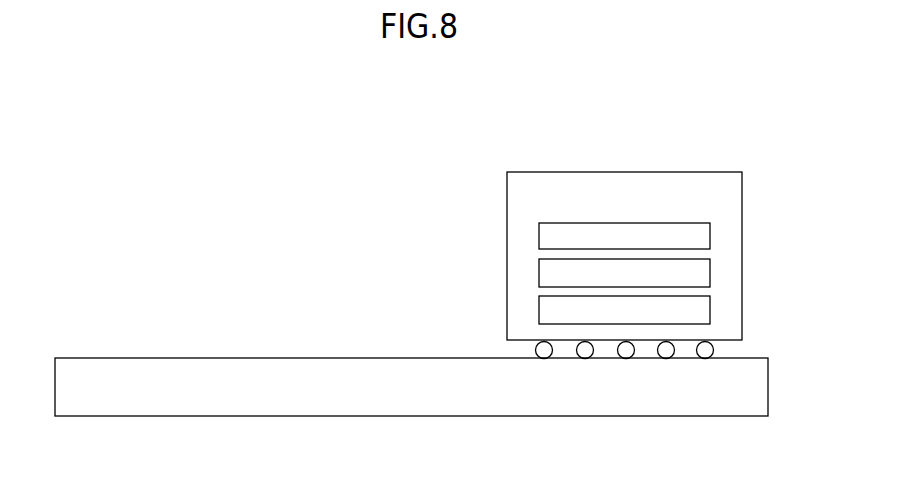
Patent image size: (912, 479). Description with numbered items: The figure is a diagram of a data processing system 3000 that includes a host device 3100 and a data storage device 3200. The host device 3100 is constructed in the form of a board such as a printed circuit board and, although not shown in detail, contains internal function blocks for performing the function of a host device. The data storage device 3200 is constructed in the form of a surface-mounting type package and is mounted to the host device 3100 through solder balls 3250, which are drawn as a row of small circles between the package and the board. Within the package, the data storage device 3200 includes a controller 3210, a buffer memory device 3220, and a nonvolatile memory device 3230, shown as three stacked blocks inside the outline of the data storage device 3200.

The data processing system 3000 is at (117, 112).
The host device 3100 is at (411, 387).
The data storage device 3200 is at (624, 256).
The controller 3210 is at (624, 237).
The buffer memory device 3220 is at (624, 274).
The nonvolatile memory device 3230 is at (624, 311).
The solder balls 3250 is at (725, 349).